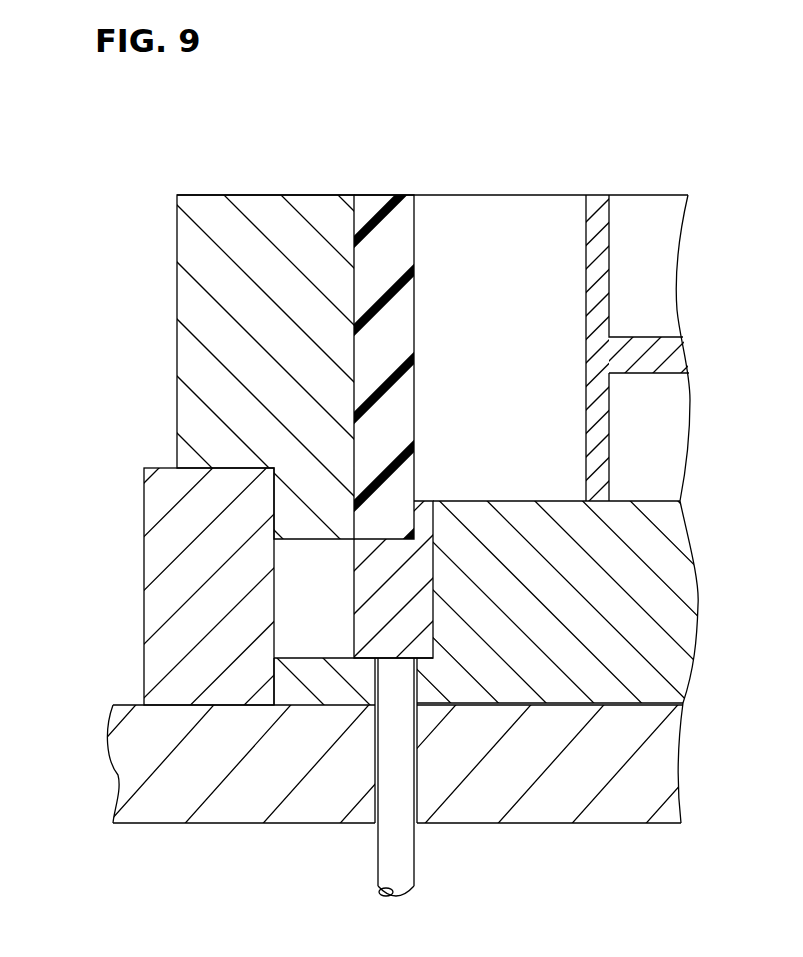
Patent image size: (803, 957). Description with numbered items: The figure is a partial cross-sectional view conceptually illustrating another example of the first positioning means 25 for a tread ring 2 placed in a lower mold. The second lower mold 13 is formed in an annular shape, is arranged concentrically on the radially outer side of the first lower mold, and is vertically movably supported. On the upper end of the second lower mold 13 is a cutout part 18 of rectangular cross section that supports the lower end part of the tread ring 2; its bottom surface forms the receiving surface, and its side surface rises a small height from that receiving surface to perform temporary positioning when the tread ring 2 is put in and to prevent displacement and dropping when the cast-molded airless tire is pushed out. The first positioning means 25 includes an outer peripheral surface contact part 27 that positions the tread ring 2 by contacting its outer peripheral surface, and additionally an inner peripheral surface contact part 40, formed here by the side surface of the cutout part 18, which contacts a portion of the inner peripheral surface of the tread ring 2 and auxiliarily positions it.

The tread ring 2 is at (392, 330).
The second lower mold 13 is at (433, 602).
The cutout part 18 is at (387, 528).
The first positioning means 25 is at (128, 432).
The outer peripheral surface contact part 27 is at (354, 277).
The inner peripheral surface contact part 40 is at (415, 512).